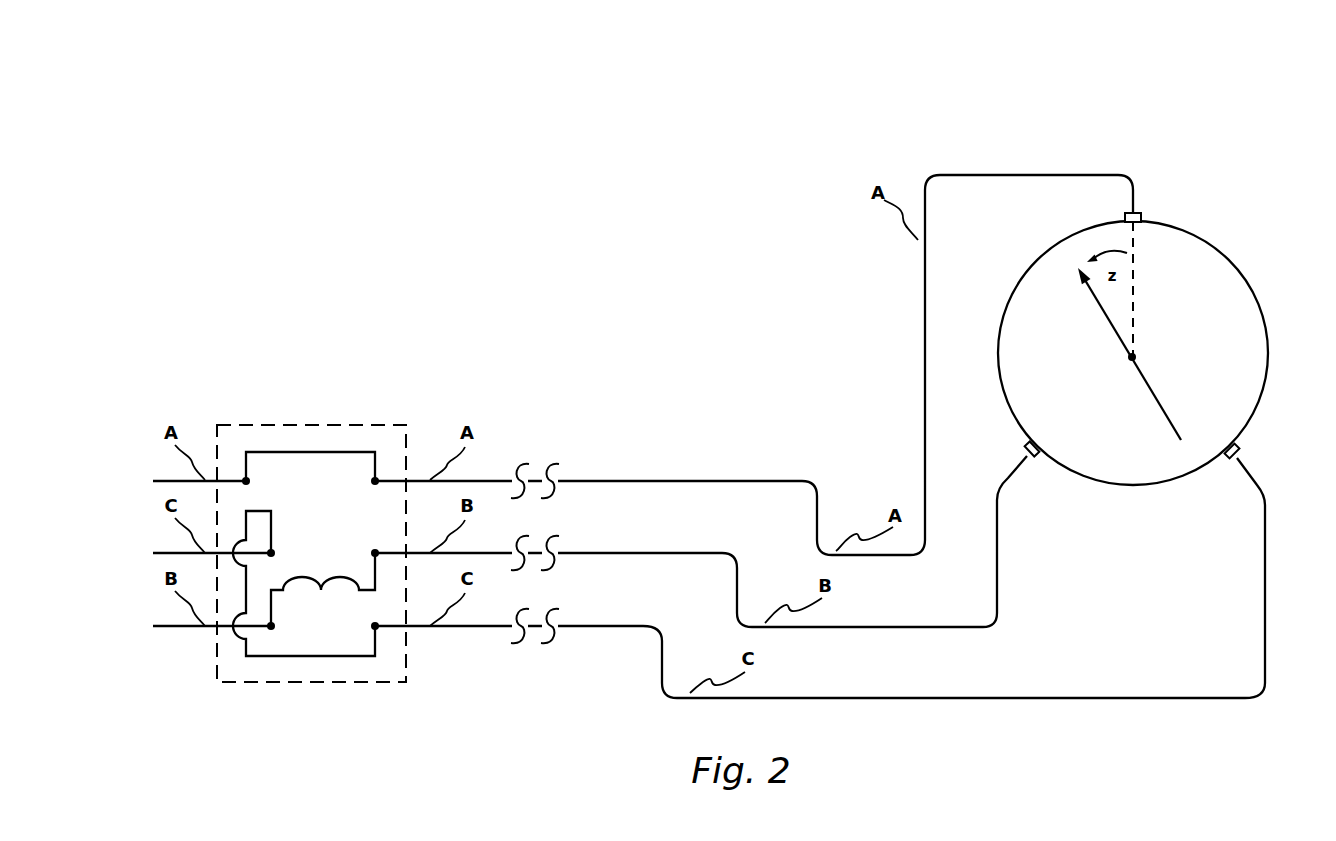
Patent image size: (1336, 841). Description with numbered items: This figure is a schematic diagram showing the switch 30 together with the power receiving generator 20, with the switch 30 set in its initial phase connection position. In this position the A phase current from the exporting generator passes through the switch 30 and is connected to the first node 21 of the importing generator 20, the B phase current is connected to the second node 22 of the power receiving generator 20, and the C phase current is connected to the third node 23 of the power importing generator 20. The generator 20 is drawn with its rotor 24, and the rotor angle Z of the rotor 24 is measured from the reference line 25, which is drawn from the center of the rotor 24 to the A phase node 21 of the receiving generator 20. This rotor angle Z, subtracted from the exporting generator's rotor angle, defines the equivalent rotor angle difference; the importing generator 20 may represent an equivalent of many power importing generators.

The power receiving generator 20 is at (1218, 247).
The first node 21 is at (1146, 217).
The second node 22 is at (1026, 446).
The third node 23 is at (1242, 448).
The rotor 24 is at (1103, 322).
The reference line 25 is at (1138, 300).
The switch 30 is at (312, 421).